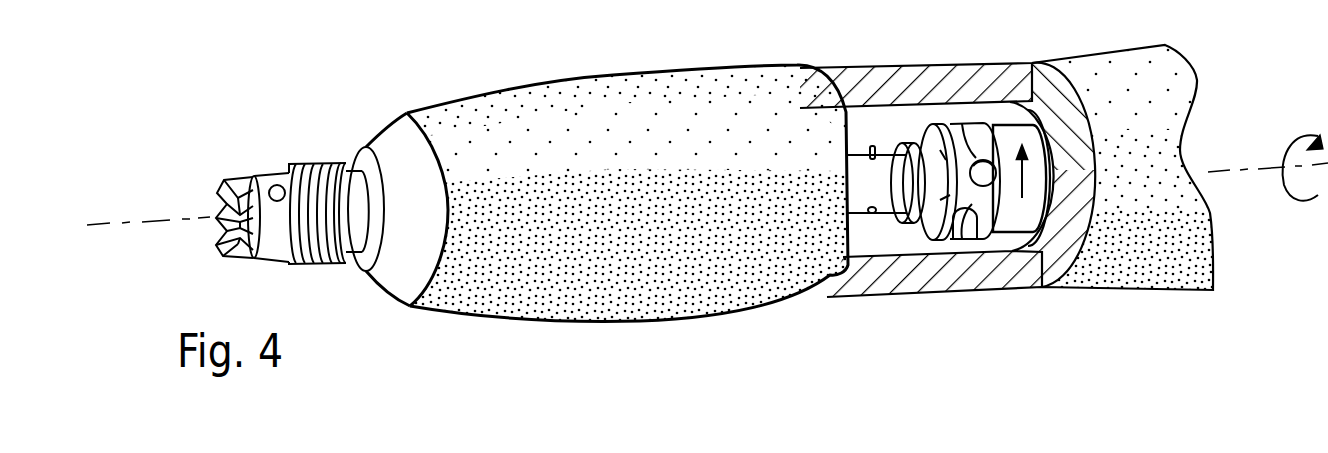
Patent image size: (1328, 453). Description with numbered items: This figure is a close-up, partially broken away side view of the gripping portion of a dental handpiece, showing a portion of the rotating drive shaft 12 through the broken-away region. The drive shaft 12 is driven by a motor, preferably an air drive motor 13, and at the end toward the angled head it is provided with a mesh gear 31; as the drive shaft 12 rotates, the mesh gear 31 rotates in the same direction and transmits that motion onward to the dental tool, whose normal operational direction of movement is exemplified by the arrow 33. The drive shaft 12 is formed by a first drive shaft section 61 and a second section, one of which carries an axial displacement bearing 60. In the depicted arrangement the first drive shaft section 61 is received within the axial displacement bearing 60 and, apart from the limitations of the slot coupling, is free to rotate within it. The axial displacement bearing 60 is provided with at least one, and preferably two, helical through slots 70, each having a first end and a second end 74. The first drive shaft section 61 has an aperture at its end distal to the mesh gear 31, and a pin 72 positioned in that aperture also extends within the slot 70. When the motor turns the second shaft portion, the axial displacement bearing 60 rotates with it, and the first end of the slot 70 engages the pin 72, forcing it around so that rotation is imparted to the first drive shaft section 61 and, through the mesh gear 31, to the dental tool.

The mesh gear 31 is at (237, 175).
The arrow 33 is at (997, 140).
The drive shaft 12 is at (867, 203).
The first drive shaft section 61 is at (857, 150).
The second end 74 is at (923, 213).
The air drive motor 13 is at (965, 225).
The helical through slot 70 is at (955, 140).
The axial displacement bearing 60 is at (988, 200).
The pin 72 is at (1003, 235).